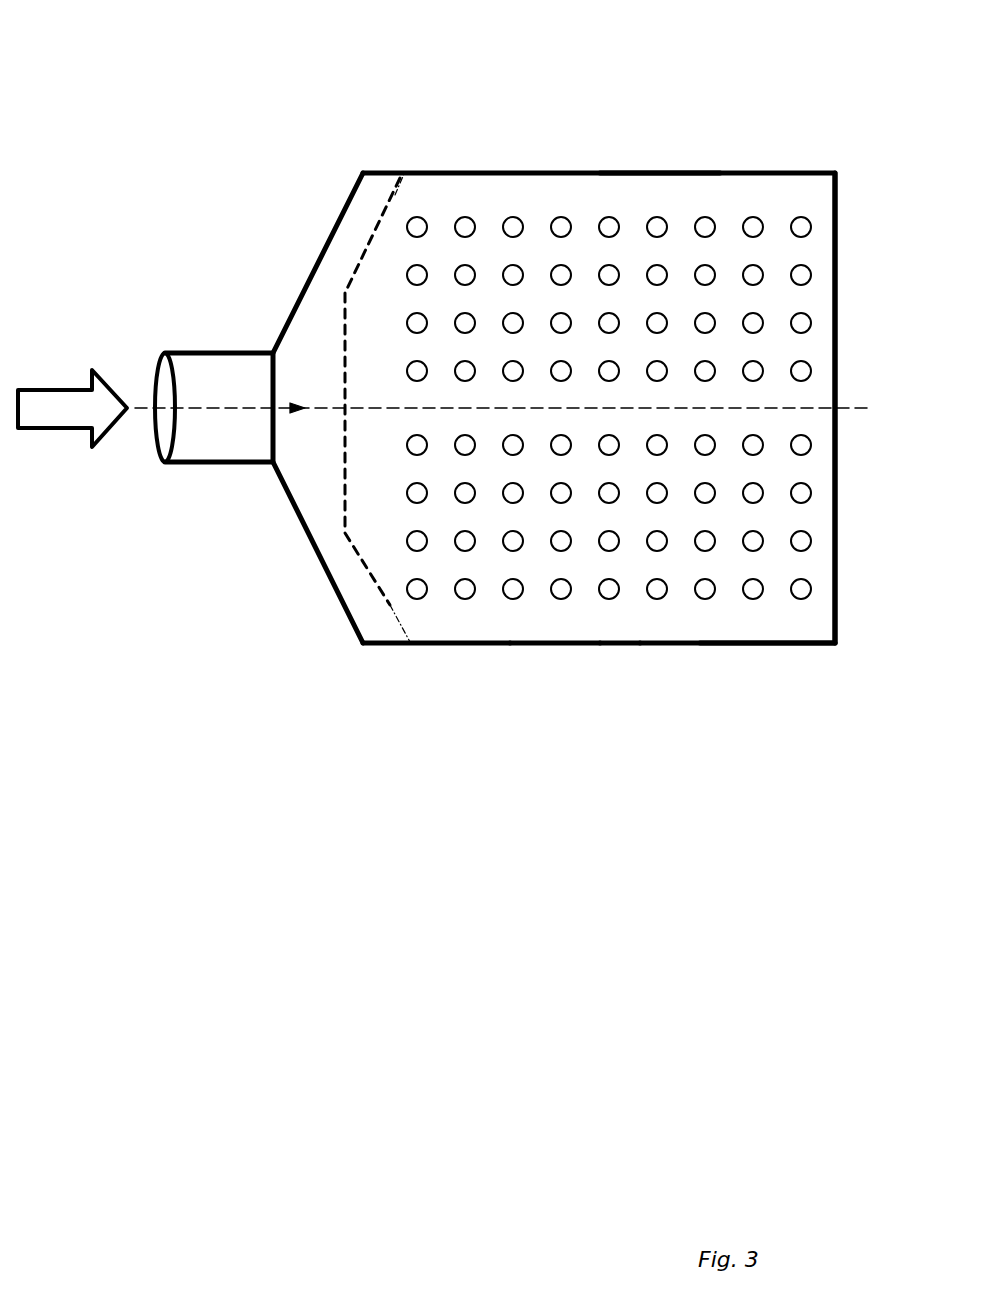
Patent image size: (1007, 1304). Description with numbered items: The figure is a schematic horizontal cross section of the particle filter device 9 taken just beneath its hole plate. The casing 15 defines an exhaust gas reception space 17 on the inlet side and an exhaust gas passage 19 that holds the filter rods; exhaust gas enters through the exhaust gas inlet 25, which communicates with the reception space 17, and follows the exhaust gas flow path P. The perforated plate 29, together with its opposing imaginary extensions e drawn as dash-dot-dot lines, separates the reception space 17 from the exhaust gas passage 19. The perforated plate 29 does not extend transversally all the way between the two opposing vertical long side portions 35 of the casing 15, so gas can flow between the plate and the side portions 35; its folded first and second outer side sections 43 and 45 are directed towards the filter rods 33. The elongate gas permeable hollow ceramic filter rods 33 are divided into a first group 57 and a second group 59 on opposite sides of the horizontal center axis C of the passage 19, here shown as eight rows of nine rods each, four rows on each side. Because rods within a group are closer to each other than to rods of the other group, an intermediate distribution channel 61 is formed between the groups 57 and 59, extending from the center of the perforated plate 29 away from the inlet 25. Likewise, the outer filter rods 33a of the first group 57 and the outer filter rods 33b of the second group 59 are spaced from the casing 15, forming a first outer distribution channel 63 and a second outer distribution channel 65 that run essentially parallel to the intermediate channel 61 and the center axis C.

The particle filter device 9 is at (819, 130).
The casing 15 is at (658, 647).
The exhaust gas reception space 17 is at (358, 227).
The exhaust gas passage 19 is at (568, 617).
The exhaust gas inlet 25 is at (210, 380).
The perforated plate 29 is at (353, 533).
The filter rods 33 is at (410, 592).
The outer filter rods of the first group 33a is at (750, 600).
The outer filter rods of the second group 33b is at (750, 226).
The long side portions 35 is at (580, 173).
The first outer side section 43 is at (377, 575).
The second outer side section 45 is at (352, 283).
The first group of filter rods 57 is at (490, 577).
The second group of filter rods 59 is at (445, 212).
The intermediate distribution channel 61 is at (387, 422).
The first outer distribution channel 63 is at (623, 617).
The second outer distribution channel 65 is at (665, 193).
The imaginary extensions e is at (396, 196).
The exhaust gas flow path P is at (180, 412).
The horizontal center axis C is at (860, 408).